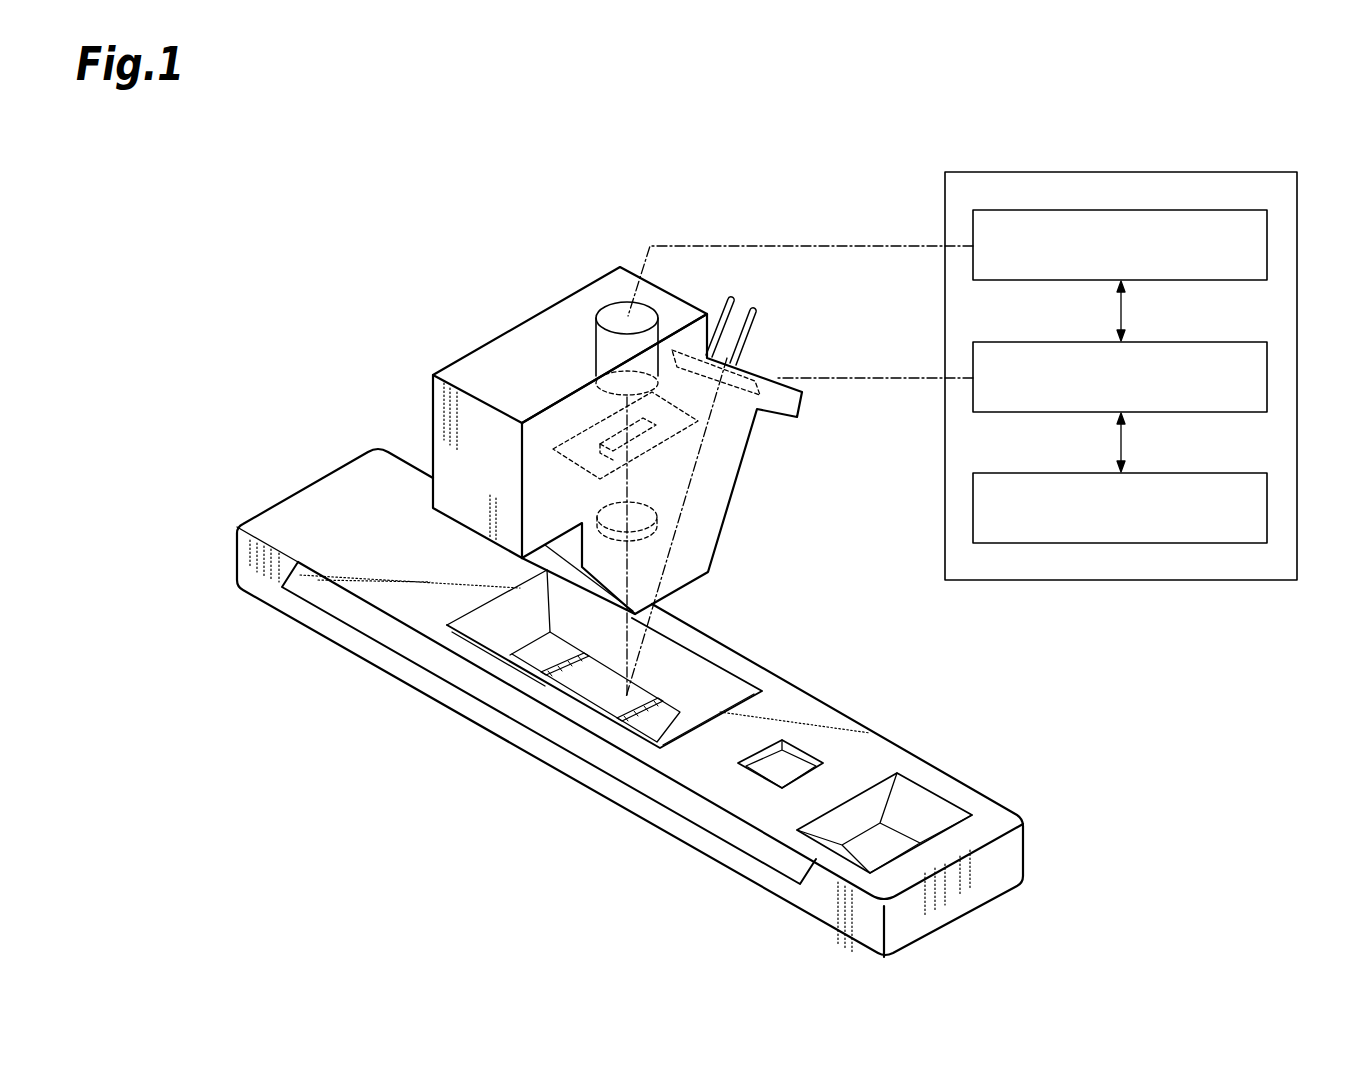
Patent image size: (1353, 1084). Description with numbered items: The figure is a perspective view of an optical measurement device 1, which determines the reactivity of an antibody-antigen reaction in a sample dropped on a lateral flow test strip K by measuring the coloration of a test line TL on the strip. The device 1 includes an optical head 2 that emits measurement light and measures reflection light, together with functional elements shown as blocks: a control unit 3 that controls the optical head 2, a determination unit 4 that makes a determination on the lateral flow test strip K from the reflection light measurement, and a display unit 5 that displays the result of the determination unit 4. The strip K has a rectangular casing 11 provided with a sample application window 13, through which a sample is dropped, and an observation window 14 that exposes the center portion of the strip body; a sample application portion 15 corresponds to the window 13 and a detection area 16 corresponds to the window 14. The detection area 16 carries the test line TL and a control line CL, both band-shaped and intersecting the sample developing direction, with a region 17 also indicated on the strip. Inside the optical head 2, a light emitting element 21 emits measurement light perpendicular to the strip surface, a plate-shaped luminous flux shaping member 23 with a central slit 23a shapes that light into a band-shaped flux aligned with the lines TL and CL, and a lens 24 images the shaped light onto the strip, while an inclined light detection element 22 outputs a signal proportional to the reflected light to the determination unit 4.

The optical measurement device 1 is at (225, 203).
The optical head 2 is at (617, 397).
The control unit 3 is at (1267, 228).
The determination unit 4 is at (1267, 359).
The display unit 5 is at (1267, 490).
The casing 11 is at (630, 688).
The sample application window 13 is at (915, 813).
The observation window 14 is at (665, 657).
The sample application portion 15 is at (870, 840).
The detection area 16 is at (518, 622).
The detection region 17 is at (686, 703).
The light emitting element 21 is at (613, 305).
The light detection element 22 is at (755, 412).
The luminous flux shaping member 23 is at (583, 430).
The slit 23a is at (650, 432).
The lens 24 is at (660, 526).
The lateral flow test strip K is at (580, 701).
The control line CL is at (626, 612).
The test line TL is at (626, 697).